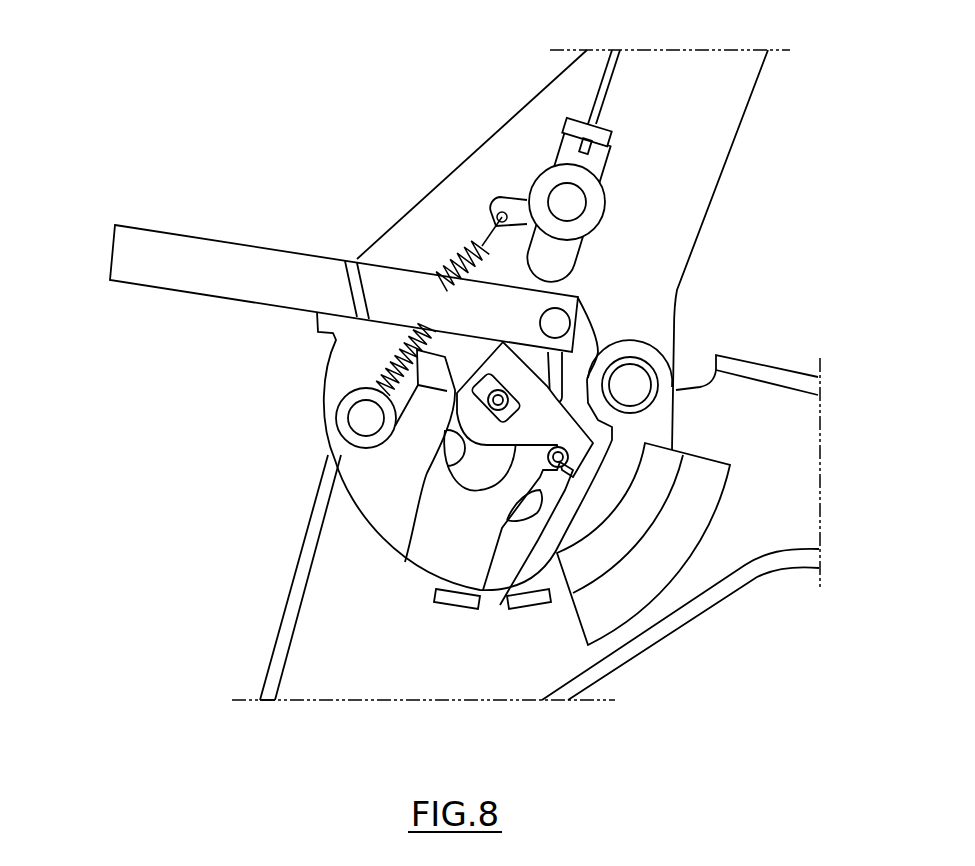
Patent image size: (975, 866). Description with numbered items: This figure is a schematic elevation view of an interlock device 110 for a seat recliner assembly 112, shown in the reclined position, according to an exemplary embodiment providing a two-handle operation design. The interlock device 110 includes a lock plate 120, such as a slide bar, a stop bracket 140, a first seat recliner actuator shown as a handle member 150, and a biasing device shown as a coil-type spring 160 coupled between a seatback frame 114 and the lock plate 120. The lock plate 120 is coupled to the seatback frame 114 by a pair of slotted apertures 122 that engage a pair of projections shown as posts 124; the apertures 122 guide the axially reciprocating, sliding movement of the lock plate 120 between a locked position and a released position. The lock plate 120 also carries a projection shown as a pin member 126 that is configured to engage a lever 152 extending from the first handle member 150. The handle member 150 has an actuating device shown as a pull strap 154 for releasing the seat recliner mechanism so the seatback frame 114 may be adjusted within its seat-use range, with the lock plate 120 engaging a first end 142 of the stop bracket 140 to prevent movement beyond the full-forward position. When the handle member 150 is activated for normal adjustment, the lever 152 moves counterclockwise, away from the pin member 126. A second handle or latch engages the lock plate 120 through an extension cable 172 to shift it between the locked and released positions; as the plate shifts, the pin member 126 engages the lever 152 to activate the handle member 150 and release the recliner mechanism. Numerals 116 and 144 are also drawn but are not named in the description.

The interlock device 110 is at (420, 640).
The seat recliner assembly 112 is at (287, 434).
The seatback frame 114 is at (572, 97).
The frame strut 116 is at (322, 605).
The lock plate 120 is at (435, 553).
The slotted apertures 122 is at (580, 257).
The posts 124 is at (570, 197).
The pin member 126 is at (558, 463).
The stop bracket 140 is at (683, 528).
The first end 142 is at (560, 560).
The support arm 144 is at (583, 443).
The handle member 150 is at (540, 393).
The lever 152 is at (674, 376).
The pull strap 154 is at (111, 253).
The spring 160 is at (457, 257).
The extension cable 172 is at (613, 80).